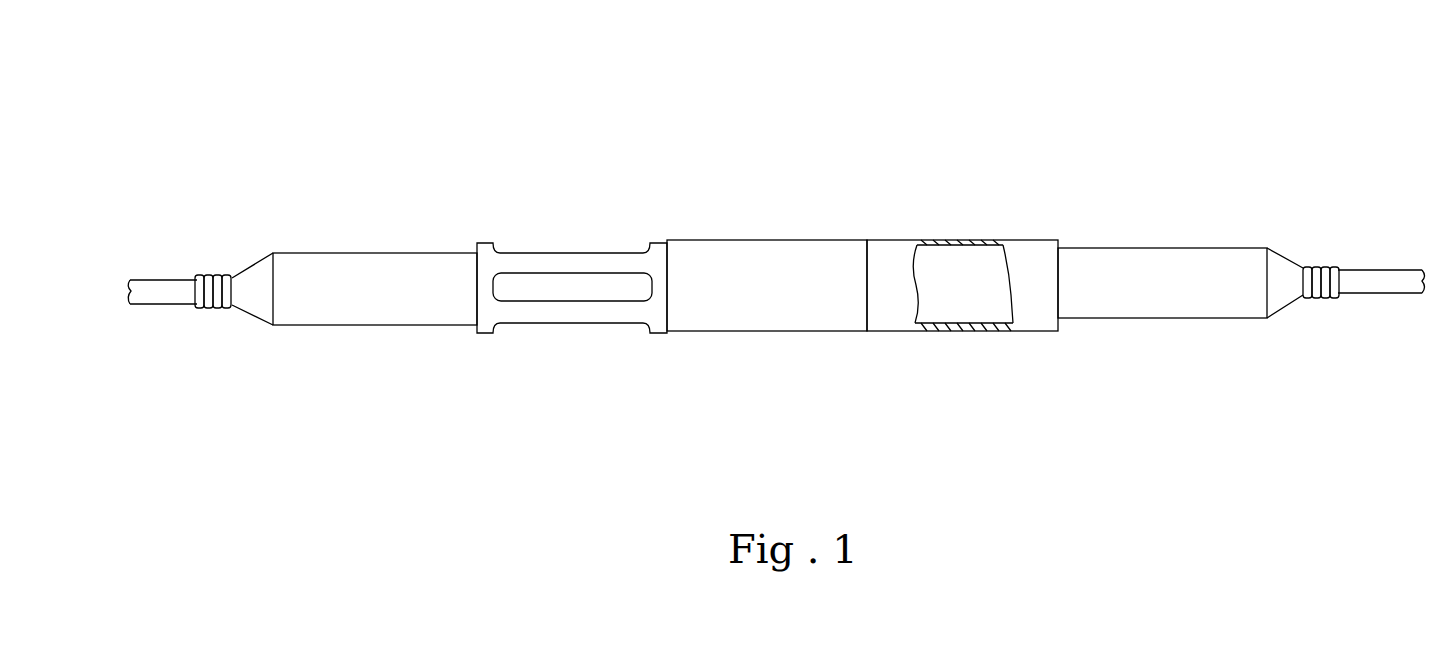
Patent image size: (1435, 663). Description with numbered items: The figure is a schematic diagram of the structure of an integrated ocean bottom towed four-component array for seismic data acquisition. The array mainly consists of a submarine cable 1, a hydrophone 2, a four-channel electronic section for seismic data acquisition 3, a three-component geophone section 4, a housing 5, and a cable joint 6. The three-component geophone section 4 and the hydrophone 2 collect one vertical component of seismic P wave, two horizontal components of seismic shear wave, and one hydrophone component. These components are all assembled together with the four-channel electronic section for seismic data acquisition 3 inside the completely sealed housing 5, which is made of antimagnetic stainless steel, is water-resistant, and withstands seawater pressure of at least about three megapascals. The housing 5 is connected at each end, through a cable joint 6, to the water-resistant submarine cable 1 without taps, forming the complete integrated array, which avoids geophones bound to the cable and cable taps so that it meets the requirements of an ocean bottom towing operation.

The submarine cable 1 is at (147, 290).
The hydrophone 2 is at (514, 287).
The four-channel electronic section for seismic data acquisition 3 is at (681, 270).
The three-component geophone section 4 is at (883, 272).
The housing 5 is at (1002, 240).
The cable joint 6 is at (376, 263).